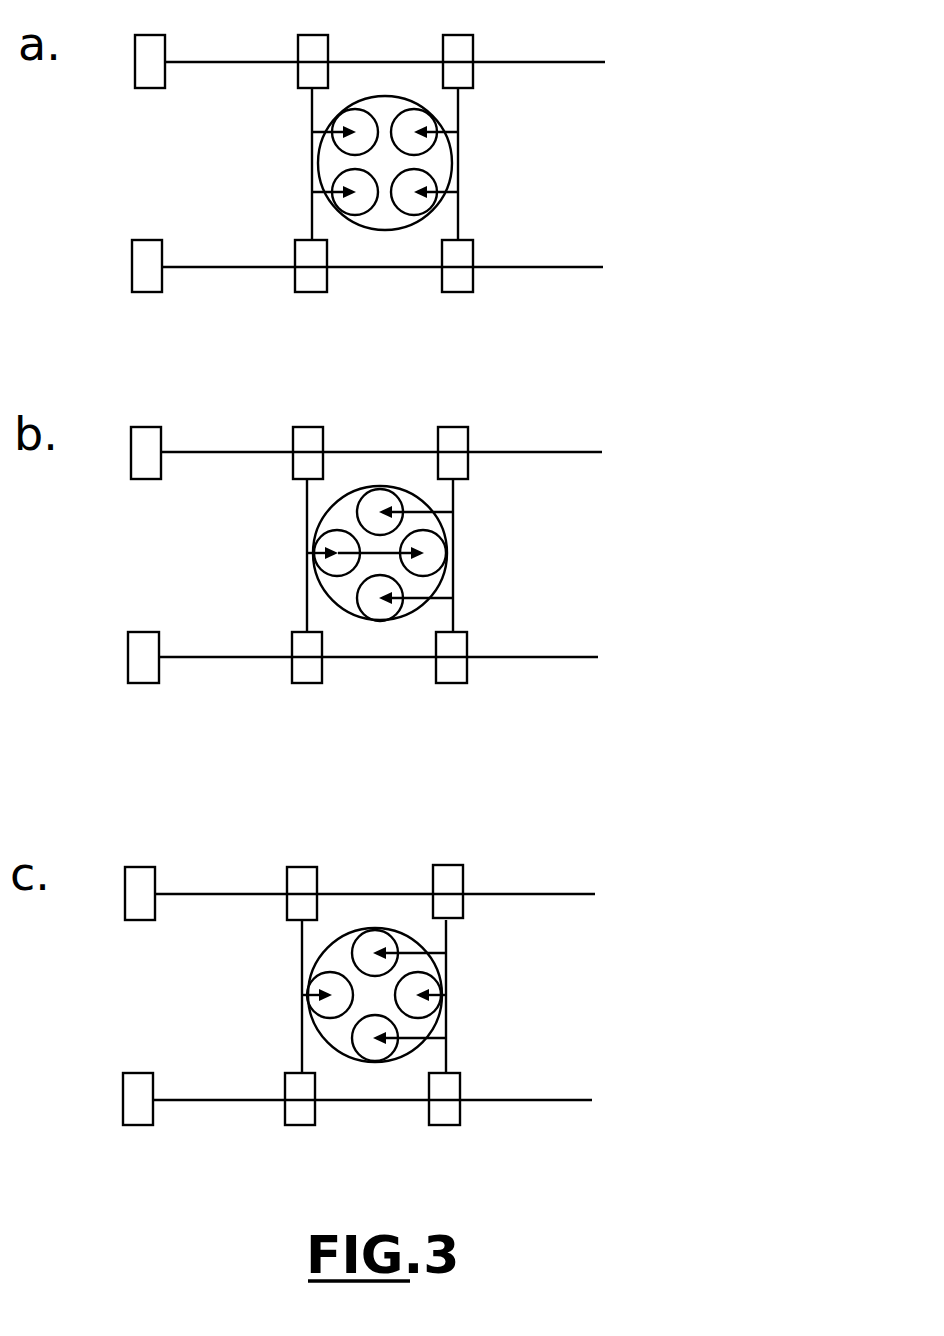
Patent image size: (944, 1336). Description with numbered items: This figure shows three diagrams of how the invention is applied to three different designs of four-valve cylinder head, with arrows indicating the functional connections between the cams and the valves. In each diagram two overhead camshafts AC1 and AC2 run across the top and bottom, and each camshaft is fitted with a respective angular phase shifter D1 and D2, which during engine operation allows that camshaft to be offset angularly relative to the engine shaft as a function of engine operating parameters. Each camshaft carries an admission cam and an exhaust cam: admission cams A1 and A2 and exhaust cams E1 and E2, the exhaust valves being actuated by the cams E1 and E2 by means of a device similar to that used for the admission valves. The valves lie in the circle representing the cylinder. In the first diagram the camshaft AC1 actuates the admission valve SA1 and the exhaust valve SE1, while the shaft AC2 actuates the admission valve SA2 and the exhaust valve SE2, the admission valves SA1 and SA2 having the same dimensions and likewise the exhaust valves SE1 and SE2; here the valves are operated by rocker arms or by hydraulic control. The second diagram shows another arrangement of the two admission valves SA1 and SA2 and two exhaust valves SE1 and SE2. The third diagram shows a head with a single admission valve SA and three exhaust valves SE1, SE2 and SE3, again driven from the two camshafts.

The overhead camshaft AC1 is at (338, 480).
The overhead camshaft AC2 is at (334, 688).
The angular phase shifter D1 is at (149, 460).
The angular phase shifter D2 is at (148, 707).
The admission cam A1 is at (311, 460).
The admission cam A2 is at (309, 707).
The exhaust cam E1 is at (456, 459).
The exhaust cam E2 is at (454, 707).
The admission valve SA1 is at (342, 117).
The admission valve SA2 is at (480, 553).
The admission valve SA is at (312, 983).
The exhaust valve SE1 is at (421, 116).
The exhaust valve SE2 is at (432, 181).
The exhaust valve SE3 is at (368, 1050).